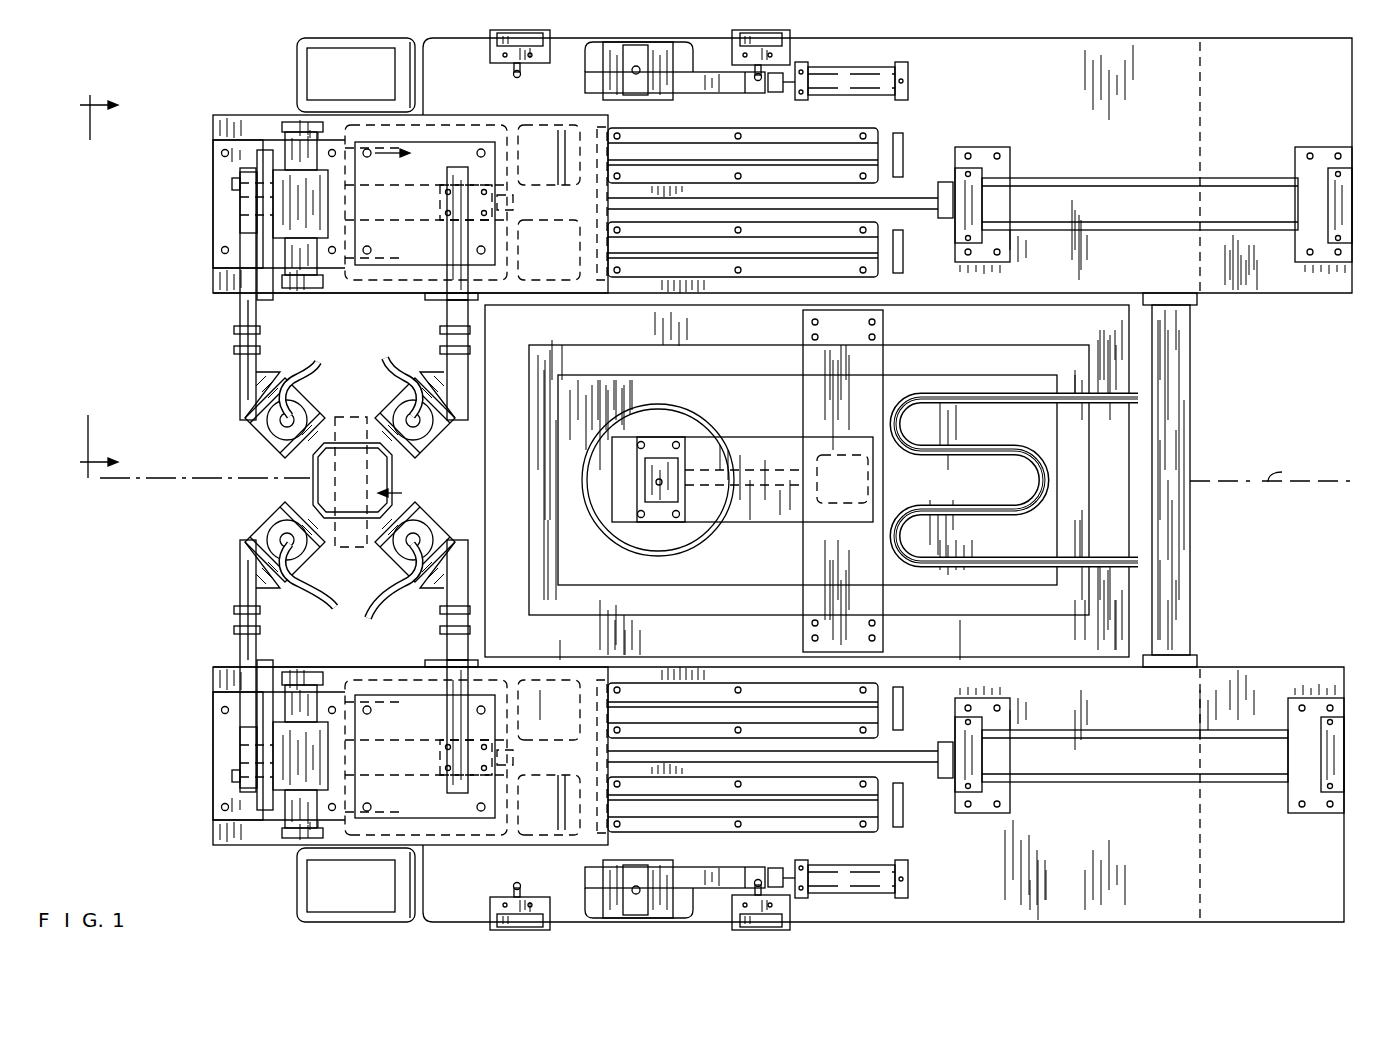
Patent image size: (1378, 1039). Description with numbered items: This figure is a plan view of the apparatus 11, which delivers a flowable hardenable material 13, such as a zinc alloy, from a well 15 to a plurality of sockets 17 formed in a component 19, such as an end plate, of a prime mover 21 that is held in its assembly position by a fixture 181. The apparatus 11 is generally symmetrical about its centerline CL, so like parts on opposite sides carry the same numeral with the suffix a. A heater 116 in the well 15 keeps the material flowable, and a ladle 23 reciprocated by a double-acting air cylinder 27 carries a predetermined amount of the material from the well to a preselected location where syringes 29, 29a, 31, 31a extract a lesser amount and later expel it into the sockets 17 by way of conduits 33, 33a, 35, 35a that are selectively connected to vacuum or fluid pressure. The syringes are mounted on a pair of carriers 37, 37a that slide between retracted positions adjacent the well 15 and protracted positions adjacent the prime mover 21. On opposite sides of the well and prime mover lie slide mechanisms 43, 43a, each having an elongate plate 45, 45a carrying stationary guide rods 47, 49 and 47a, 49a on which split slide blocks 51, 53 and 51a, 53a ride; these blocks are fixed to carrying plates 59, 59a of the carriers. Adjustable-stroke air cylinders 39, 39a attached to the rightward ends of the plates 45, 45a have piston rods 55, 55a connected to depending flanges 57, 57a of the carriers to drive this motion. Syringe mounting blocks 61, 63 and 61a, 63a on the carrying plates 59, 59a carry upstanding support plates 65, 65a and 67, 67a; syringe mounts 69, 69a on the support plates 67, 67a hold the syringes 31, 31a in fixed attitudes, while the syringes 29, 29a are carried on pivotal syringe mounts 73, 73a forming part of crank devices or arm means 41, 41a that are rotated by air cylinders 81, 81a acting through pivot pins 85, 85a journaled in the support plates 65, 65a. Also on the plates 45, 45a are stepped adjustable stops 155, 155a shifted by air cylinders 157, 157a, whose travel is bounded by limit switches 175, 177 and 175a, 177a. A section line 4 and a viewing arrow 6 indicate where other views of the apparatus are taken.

The apparatus 11 is at (1300, 540).
The flowable hardenable material 13 is at (968, 490).
The well 15 is at (1130, 358).
The sockets 17 is at (392, 465).
The component 19 is at (313, 478).
The prime mover 21 is at (312, 482).
The ladle 23 is at (690, 410).
The double-acting air cylinder 27 is at (659, 488).
The syringe 29 is at (282, 535).
The syringe 29a is at (268, 425).
The syringe 31 is at (430, 540).
The syringe 31a is at (430, 425).
The conduit 33 is at (315, 588).
The conduit 33a is at (308, 358).
The conduit 35 is at (388, 588).
The conduit 35a is at (390, 355).
The carrier 37 is at (208, 832).
The carrier 37a is at (213, 115).
The double-acting air cylinder 39 is at (1233, 772).
The double-acting air cylinder 39a is at (1152, 216).
The crank device 41 is at (226, 588).
The crank device 41a is at (226, 373).
The slide mechanism 43 is at (1292, 667).
The slide mechanism 43a is at (1350, 331).
The elongate plate 45 is at (1252, 885).
The elongate plate 45a is at (1277, 87).
The guide rod 47 is at (880, 805).
The guide rod 47a is at (880, 262).
The guide rod 49 is at (880, 712).
The guide rod 49a is at (880, 152).
The split slide block 51 is at (368, 838).
The split slide block 51a is at (350, 125).
The split slide block 53 is at (543, 677).
The split slide block 53a is at (545, 125).
The piston rod 55 is at (905, 760).
The piston rod 55a is at (905, 213).
The depending flange 57 is at (440, 752).
The depending flange 57a is at (440, 205).
The carrying plate 59 is at (213, 832).
The carrying plate 59a is at (213, 126).
The syringe mounting block 61 is at (218, 707).
The syringe mounting block 61a is at (222, 258).
The syringe mounting block 63 is at (478, 700).
The syringe mounting block 63a is at (478, 258).
The support plate 65 is at (263, 810).
The support plate 65a is at (263, 150).
The support plate 67 is at (462, 795).
The support plate 67a is at (462, 167).
The syringe mount 69 is at (468, 592).
The syringe mount 69a is at (468, 377).
The syringe mount 73 is at (240, 618).
The syringe mount 73a is at (240, 343).
The air cylinder 81 is at (290, 835).
The air cylinder 81a is at (292, 122).
The pivot pin 85 is at (250, 744).
The pivot pin 85a is at (248, 218).
The heater 116 is at (1016, 480).
The adjustable stop 155 is at (690, 872).
The adjustable stop 155a is at (718, 93).
The air cylinder 157 is at (910, 886).
The air cylinder 157a is at (910, 75).
The limit switch 175 is at (492, 916).
The limit switch 175a is at (492, 47).
The limit switch 177 is at (790, 918).
The limit switch 177a is at (790, 42).
The fixture 181 is at (350, 417).
The section line 4- 4 is at (195, 285).
The view arrow 6 is at (401, 323).